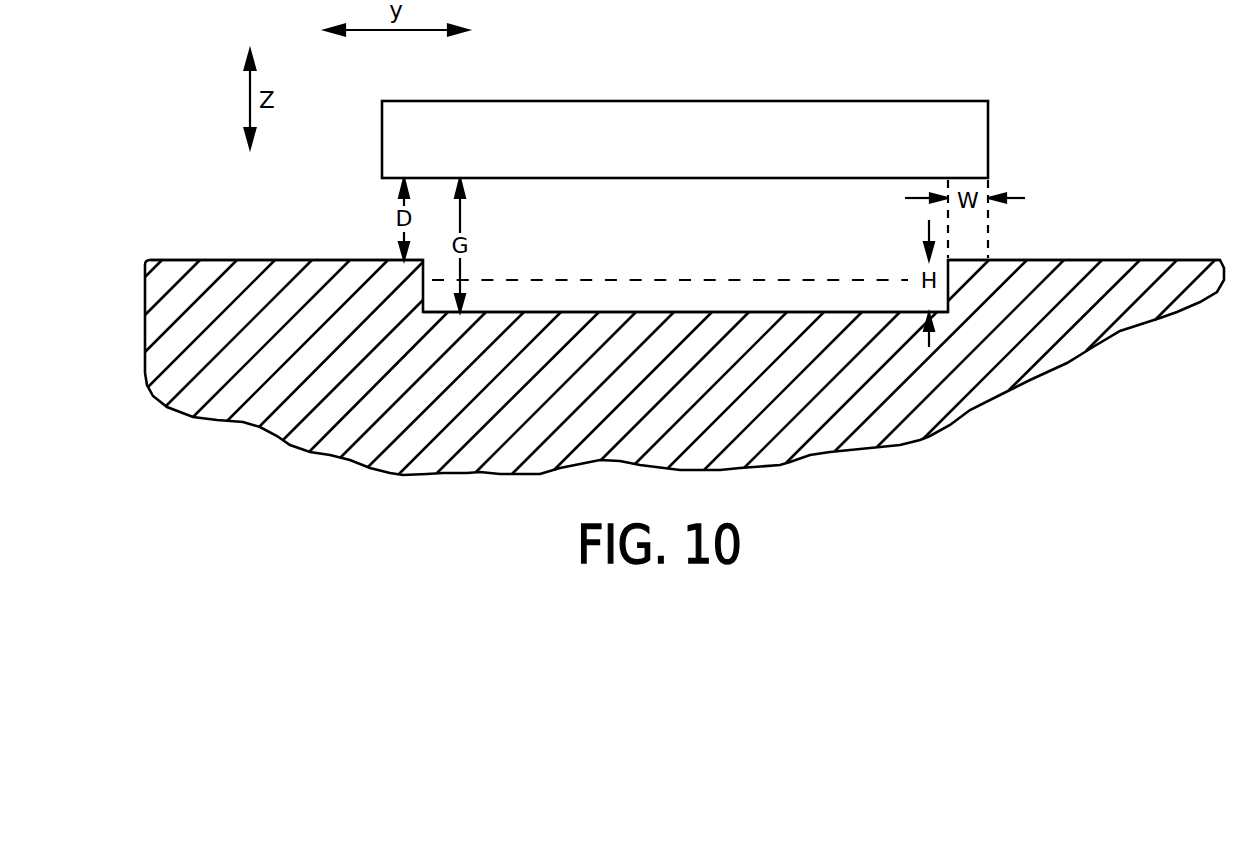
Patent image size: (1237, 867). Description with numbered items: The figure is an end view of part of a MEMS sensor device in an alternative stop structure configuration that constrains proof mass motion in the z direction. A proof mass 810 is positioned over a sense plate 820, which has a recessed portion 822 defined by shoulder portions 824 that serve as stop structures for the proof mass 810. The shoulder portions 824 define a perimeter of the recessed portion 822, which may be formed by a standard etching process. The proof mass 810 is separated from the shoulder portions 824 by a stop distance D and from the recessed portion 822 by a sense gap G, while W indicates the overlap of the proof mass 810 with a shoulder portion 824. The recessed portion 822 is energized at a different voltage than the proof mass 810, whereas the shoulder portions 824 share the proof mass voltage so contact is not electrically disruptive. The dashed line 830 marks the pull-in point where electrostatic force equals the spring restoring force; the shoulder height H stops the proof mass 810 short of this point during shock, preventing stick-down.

The proof mass 810 is at (675, 101).
The sense plate 820 is at (1047, 340).
The recessed portion 822 is at (668, 312).
The shoulder portions 824 is at (373, 260).
The line 830 is at (596, 280).